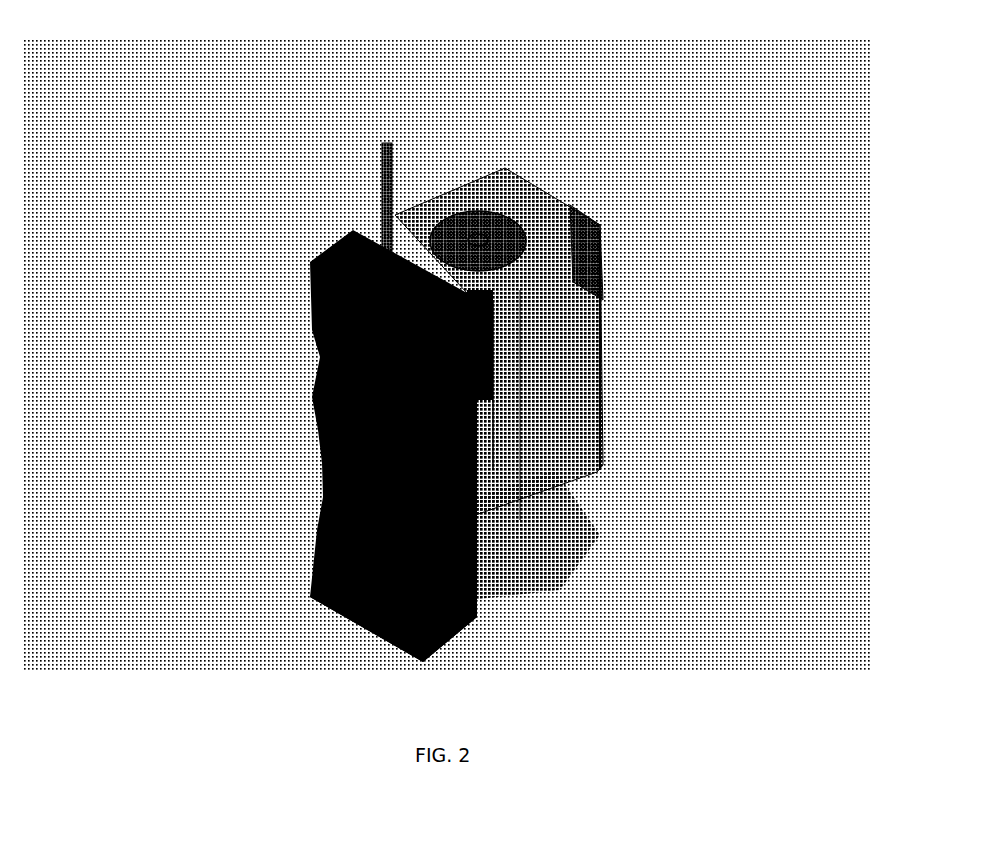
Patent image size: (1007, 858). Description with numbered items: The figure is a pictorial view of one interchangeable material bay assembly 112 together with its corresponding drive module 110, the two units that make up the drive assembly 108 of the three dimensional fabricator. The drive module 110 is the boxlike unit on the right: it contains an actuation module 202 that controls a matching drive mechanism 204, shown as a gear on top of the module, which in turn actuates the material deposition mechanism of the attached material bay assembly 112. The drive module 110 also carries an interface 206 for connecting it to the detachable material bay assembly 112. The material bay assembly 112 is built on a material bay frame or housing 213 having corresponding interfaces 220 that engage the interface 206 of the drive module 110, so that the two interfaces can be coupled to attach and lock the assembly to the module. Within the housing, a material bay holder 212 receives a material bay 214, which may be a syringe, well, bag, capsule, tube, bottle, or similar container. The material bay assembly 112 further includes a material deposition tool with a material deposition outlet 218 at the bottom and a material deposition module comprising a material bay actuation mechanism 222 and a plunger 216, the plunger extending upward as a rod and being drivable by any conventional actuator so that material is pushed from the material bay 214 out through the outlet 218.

The drive assembly 108 is at (551, 58).
The drive module 110 is at (600, 237).
The interchangeable material bay assembly 112 is at (300, 250).
The actuation module 202 is at (537, 450).
The matching drive mechanism 204 is at (517, 230).
The interface 206 is at (513, 355).
The material bay holder 212 is at (310, 412).
The material bay frame or housing 213 is at (407, 640).
The material bay 214 is at (323, 469).
The plunger 216 is at (380, 185).
The material deposition outlet 218 is at (375, 632).
The interfaces 220 is at (600, 402).
The material bay actuation mechanism 222 is at (305, 295).